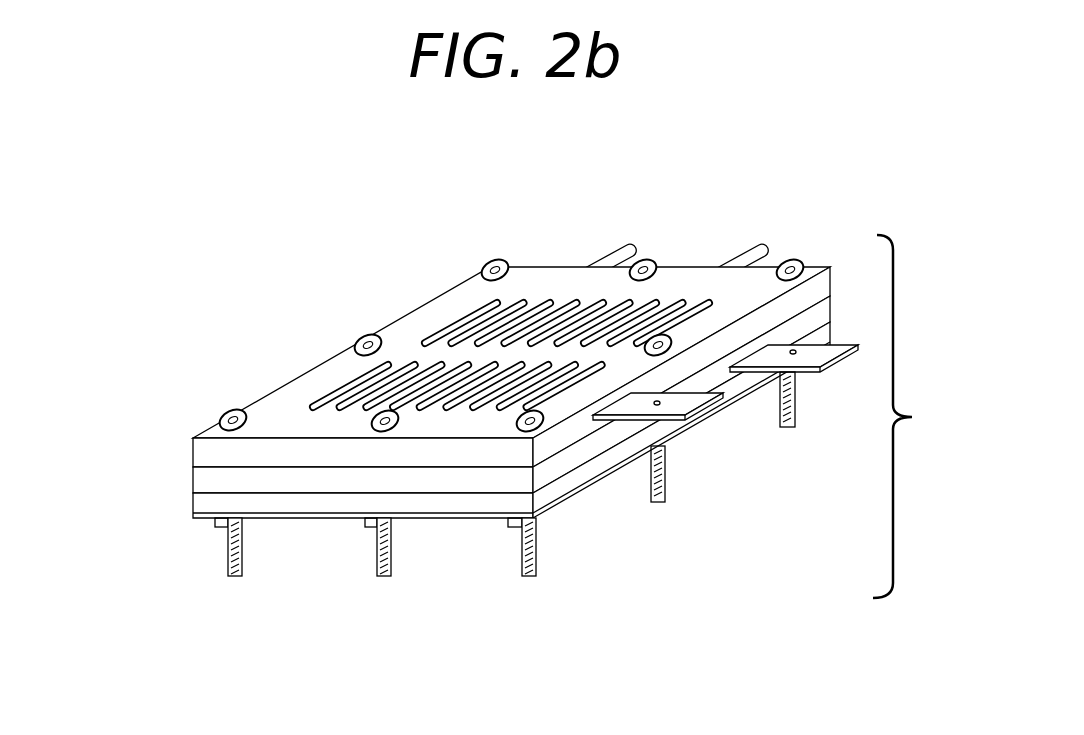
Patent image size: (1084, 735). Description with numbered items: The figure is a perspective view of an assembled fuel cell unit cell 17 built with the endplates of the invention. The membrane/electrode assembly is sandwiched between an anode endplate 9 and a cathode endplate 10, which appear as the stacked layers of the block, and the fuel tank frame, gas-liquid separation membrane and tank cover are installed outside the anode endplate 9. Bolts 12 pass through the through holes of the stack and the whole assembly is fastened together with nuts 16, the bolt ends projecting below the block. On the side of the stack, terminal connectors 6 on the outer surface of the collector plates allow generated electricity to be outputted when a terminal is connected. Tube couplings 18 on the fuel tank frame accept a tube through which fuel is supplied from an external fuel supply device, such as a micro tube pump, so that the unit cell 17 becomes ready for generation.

The terminal connector 6 is at (660, 406).
The anode endplate 9 is at (203, 487).
The cathode endplate 10 is at (207, 455).
The bolts 12 is at (237, 415).
The nuts 16 is at (222, 525).
The unit cell 17 is at (916, 416).
The tube coupling 18 is at (630, 250).